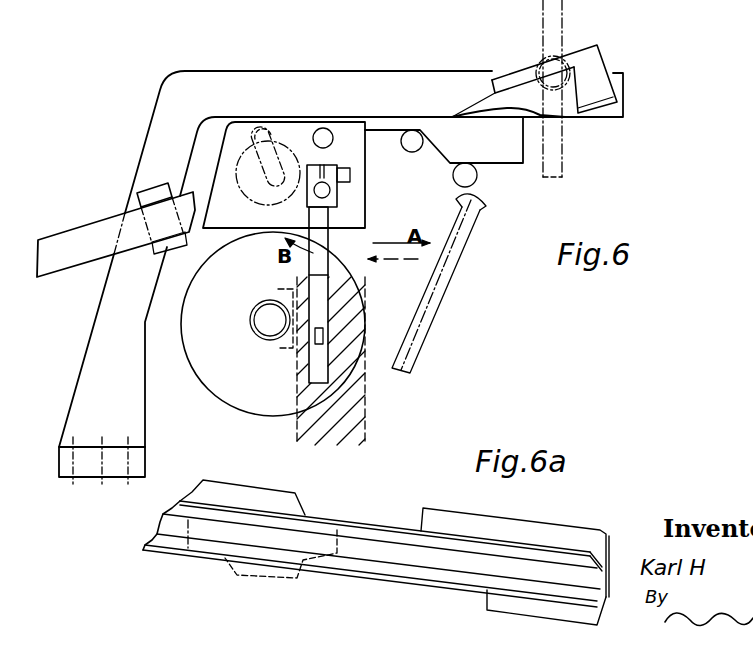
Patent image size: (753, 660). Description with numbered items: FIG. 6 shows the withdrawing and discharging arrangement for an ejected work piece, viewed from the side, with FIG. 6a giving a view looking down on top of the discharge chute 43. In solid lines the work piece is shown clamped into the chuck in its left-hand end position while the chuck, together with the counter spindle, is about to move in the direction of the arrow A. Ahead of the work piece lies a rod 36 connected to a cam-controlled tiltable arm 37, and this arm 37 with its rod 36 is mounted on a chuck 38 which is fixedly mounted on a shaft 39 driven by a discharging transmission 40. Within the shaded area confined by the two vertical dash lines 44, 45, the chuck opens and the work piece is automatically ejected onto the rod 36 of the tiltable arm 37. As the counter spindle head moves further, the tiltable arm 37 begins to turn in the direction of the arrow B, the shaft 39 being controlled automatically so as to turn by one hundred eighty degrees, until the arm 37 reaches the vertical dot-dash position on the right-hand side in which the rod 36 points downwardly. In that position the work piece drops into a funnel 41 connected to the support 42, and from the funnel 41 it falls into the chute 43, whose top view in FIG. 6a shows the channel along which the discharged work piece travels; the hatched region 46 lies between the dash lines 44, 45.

In FIG. 6, the support 42 is at (373, 80).
In FIG. 6, the discharging transmission 40 is at (353, 148).
In FIG. 6, the chuck 38 is at (332, 206).
In FIG. 6, the shaft 39 is at (330, 192).
In FIG. 6, the tiltable arm 37 is at (313, 268).
In FIG. 6, the rod 36 is at (323, 337).
In FIG. 6, the vertical dash line 44 is at (298, 405).
In FIG. 6, the vertical dash line 45 is at (365, 402).
In FIG. 6, the support block 46 is at (302, 433).
In FIG. 6, the funnel 41 is at (515, 77).
In FIG. 6, the chute 43 is at (507, 107).
In FIG. 6A, the chute 43 is at (370, 545).